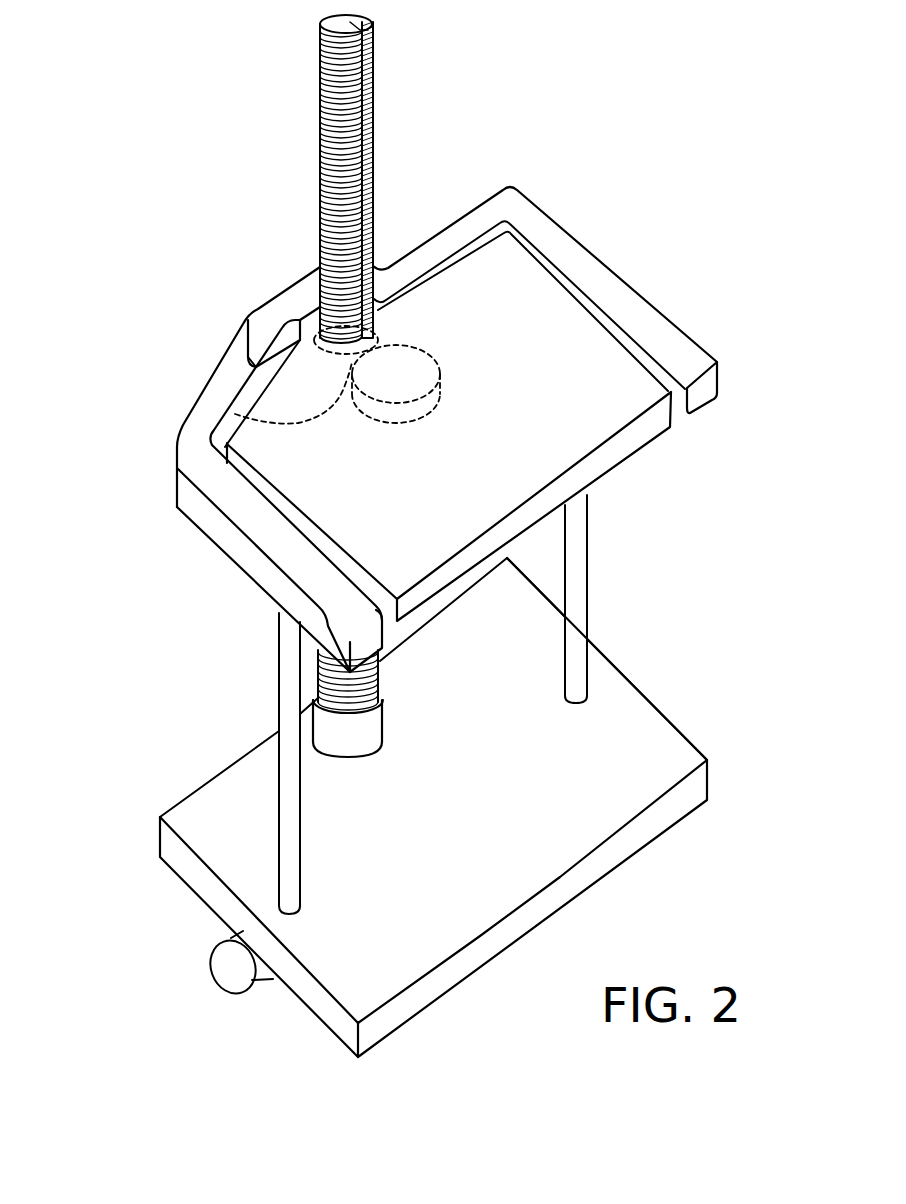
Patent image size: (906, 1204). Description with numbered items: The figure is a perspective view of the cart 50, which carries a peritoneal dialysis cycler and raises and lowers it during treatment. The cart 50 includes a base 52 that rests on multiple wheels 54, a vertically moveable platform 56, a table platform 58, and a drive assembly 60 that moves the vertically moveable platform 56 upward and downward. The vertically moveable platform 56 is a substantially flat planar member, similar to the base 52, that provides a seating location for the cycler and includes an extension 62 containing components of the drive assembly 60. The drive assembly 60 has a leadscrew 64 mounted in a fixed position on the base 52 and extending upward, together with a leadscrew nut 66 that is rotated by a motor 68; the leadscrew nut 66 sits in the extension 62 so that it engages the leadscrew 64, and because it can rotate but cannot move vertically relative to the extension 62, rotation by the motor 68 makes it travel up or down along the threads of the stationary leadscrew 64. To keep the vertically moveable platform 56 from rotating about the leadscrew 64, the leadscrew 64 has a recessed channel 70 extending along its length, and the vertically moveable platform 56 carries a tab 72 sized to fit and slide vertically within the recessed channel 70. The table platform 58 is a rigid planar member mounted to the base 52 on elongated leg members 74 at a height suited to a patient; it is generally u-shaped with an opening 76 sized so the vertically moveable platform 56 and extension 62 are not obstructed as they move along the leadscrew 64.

The cart 50 is at (663, 164).
The base 52 is at (660, 752).
The wheels 54 is at (222, 975).
The vertically moveable platform 56 is at (648, 436).
The table platform 58 is at (205, 481).
The drive assembly 60 is at (265, 185).
The extension 62 is at (267, 314).
The leadscrew 64 is at (372, 82).
The leadscrew nut 66 is at (378, 313).
The motor 68 is at (235, 414).
The recessed channel 70 is at (357, 123).
The tab 72 is at (375, 336).
The leg members 74 is at (280, 690).
The opening 76 is at (292, 347).